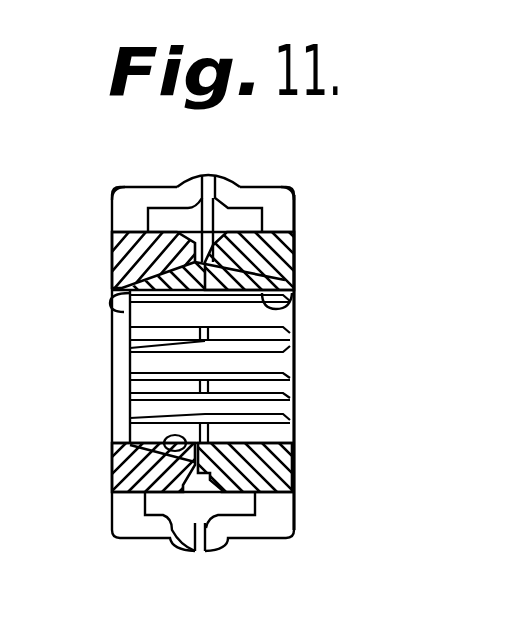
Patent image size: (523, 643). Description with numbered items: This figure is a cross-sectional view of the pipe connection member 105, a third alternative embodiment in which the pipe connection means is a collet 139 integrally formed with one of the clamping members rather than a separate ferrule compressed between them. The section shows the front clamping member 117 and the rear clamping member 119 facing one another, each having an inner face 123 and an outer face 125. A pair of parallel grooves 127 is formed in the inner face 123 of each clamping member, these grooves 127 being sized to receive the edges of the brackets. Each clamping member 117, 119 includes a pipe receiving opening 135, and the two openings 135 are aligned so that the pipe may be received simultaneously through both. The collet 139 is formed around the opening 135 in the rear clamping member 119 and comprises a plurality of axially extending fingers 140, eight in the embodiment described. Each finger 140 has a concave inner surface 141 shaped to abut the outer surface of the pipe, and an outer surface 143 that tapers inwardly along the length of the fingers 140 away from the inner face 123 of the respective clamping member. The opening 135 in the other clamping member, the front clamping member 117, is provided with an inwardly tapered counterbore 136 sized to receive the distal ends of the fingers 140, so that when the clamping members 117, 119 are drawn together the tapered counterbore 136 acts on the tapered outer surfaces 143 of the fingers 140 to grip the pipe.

The pipe connection member 105 is at (323, 149).
The front clamping member 117 is at (148, 187).
The rear clamping member 119 is at (265, 186).
The inner face 123 is at (207, 198).
The outer face 125 is at (113, 210).
The grooves 127 is at (214, 202).
The pipe receiving opening 135 is at (110, 308).
The inwardly tapered counterbore 136 is at (130, 330).
The collet 139 is at (145, 364).
The fingers 140 is at (265, 360).
The concave inner surface 141 is at (217, 371).
The outer surface 143 is at (180, 275).